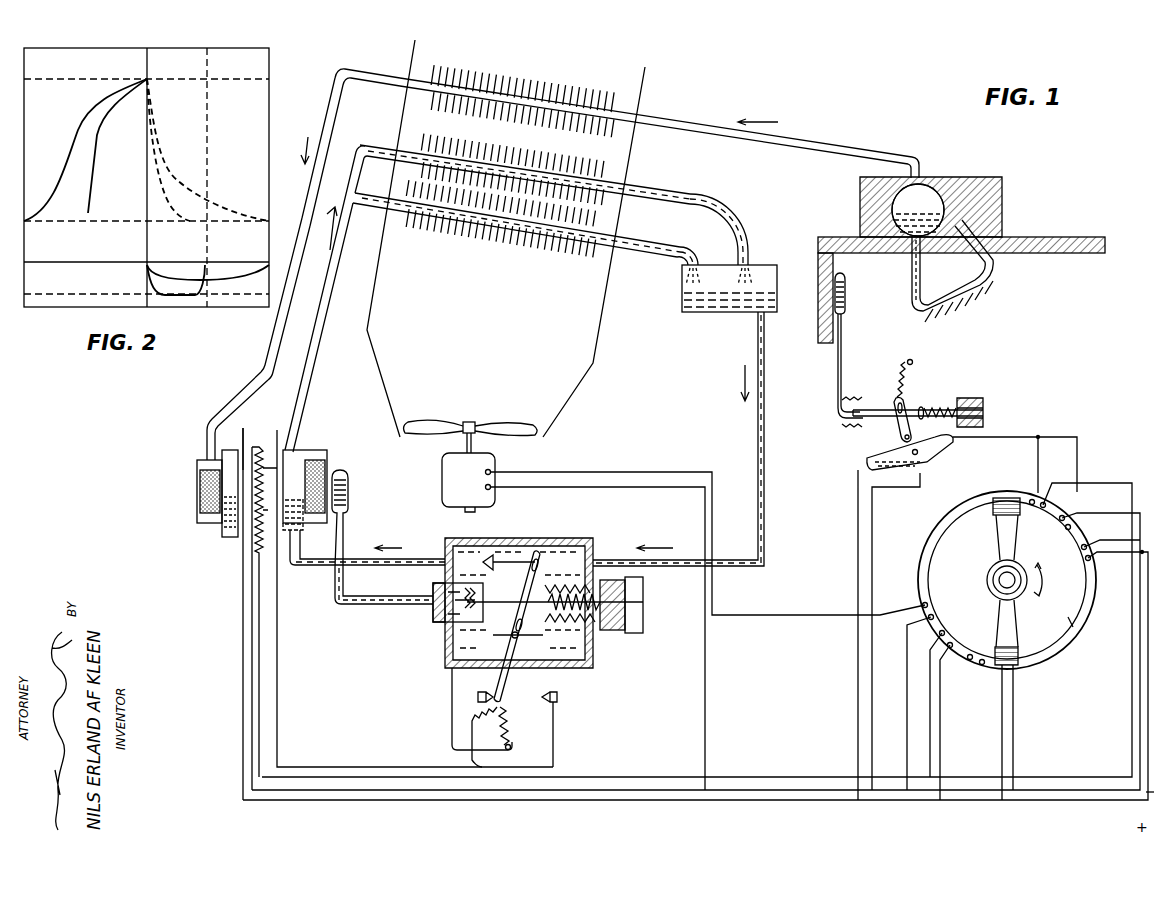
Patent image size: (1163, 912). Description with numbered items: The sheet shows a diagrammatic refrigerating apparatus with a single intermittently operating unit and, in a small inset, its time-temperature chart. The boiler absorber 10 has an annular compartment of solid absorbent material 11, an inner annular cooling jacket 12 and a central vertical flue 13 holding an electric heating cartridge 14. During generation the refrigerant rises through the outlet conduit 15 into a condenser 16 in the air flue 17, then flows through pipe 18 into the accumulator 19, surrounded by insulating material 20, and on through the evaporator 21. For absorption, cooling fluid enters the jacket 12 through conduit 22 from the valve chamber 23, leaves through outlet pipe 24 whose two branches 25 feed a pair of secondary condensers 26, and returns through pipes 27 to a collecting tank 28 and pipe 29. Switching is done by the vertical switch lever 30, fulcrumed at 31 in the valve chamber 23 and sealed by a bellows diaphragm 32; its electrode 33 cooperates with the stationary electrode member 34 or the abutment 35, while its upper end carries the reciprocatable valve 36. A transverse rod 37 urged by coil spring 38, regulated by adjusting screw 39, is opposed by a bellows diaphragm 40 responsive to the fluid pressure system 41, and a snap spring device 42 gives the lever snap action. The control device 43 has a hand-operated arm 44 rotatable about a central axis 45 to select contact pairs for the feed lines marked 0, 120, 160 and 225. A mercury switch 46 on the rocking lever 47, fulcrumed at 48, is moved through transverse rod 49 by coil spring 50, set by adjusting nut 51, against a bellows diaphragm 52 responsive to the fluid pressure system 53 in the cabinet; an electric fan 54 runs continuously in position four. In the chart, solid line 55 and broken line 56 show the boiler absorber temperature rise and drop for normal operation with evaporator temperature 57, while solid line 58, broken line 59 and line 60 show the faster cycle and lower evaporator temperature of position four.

In FIG. 1, the boiler absorber 10 is at (323, 444).
In FIG. 1, the solid absorbent material 11 is at (197, 475).
In FIG. 1, the annular cooling jacket 12 is at (222, 532).
In FIG. 1, the central vertical flue 13 is at (243, 428).
In FIG. 1, the electric heating cartridge 14 is at (262, 445).
In FIG. 1, the outlet conduit 15 is at (258, 360).
In FIG. 1, the condenser 16 is at (528, 68).
In FIG. 1, the air flue 17 is at (405, 102).
In FIG. 1, the pipe 18 is at (710, 112).
In FIG. 1, the accumulator 19 is at (895, 207).
In FIG. 1, the insulating material 20 is at (1002, 186).
In FIG. 1, the evaporator 21 is at (1001, 290).
In FIG. 1, the conduit 22 is at (361, 545).
In FIG. 1, the valve chamber 23 is at (518, 540).
In FIG. 1, the outlet pipe 24 is at (314, 299).
In FIG. 1, the branches 25 is at (385, 144).
In FIG. 1, the secondary condensers 26 is at (543, 141).
In FIG. 1, the pipes 27 is at (690, 193).
In FIG. 1, the collecting tank 28 is at (728, 265).
In FIG. 1, the pipe 29 is at (766, 425).
In FIG. 1, the switch lever 30 is at (508, 668).
In FIG. 1, the fulcrum 31 is at (518, 645).
In FIG. 1, the bellows diaphragm 32 is at (493, 668).
In FIG. 1, the electrode 33 is at (542, 697).
In FIG. 1, the stationary electrode member 34 is at (566, 664).
In FIG. 1, the abutment 35 is at (478, 700).
In FIG. 1, the reciprocatable valve 36 is at (488, 548).
In FIG. 1, the transverse rod 37 is at (643, 607).
In FIG. 1, the coil spring 38 is at (600, 630).
In FIG. 1, the adjusting screw 39 is at (638, 633).
In FIG. 1, the bellows diaphragm 40 is at (455, 613).
In FIG. 1, the fluid pressure system 41 is at (349, 490).
In FIG. 1, the snap spring device 42 is at (509, 744).
In FIG. 1, the control device 43 is at (999, 589).
In FIG. 1, the hand-operated arm 44 is at (1013, 535).
In FIG. 1, the central axis 45 is at (987, 578).
In FIG. 1, the mercury switch 46 is at (938, 458).
In FIG. 1, the rocking lever 47 is at (893, 425).
In FIG. 1, the fulcrum 48 is at (912, 425).
In FIG. 1, the transverse rod 49 is at (912, 397).
In FIG. 1, the coil spring 50 is at (944, 402).
In FIG. 1, the adjusting nut 51 is at (983, 398).
In FIG. 1, the bellows diaphragm 52 is at (858, 397).
In FIG. 1, the fluid pressure system 53 is at (845, 300).
In FIG. 1, the electric fan 54 is at (442, 478).
In FIG. 2, the solid line 55 is at (62, 182).
In FIG. 2, the broken line 56 is at (160, 137).
In FIG. 2, the solid line 57 is at (238, 280).
In FIG. 2, the solid line 58 is at (93, 187).
In FIG. 2, the broken line 59 is at (177, 212).
In FIG. 2, the line 60 is at (150, 281).
In FIG. 1, the feed line 120 is at (979, 706).
In FIG. 1, the feed line 160 is at (1097, 485).
In FIG. 1, the feed line 225 is at (1125, 512).
In FIG. 1, the feed line 0 is at (381, 805).